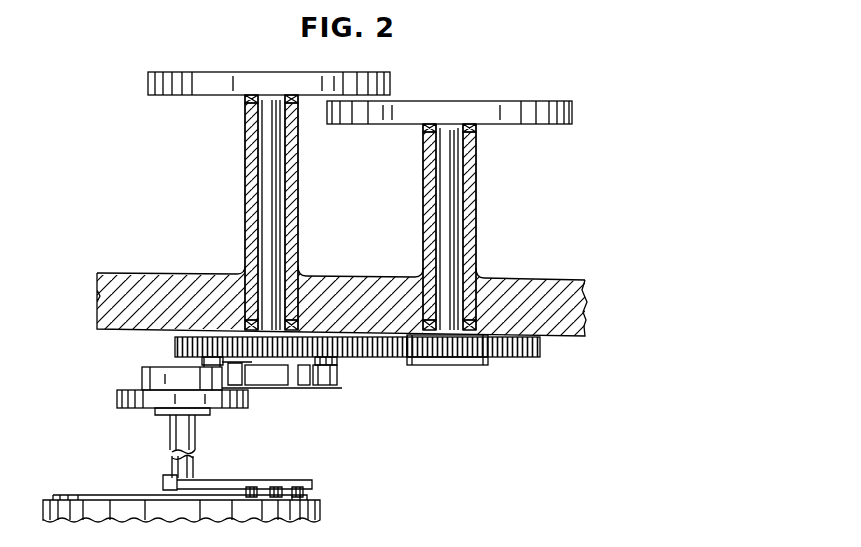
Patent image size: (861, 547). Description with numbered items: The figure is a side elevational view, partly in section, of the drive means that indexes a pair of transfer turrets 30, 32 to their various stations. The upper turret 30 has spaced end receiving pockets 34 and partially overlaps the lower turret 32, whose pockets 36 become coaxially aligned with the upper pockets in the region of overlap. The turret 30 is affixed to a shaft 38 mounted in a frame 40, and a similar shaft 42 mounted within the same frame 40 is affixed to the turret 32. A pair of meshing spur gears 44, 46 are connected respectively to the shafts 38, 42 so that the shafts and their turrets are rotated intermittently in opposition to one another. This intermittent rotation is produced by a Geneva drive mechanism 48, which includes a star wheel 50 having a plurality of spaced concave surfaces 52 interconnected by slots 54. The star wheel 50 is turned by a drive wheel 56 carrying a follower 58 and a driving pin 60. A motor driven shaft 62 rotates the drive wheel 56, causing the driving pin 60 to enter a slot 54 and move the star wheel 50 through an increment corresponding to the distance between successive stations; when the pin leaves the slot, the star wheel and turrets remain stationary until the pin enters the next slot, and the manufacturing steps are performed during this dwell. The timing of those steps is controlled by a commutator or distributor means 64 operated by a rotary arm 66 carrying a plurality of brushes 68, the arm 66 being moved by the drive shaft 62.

The transfer turret 30 is at (244, 72).
The transfer turret 32 is at (538, 102).
The end receiving pocket 34 is at (336, 86).
The end receiving pocket 36 is at (392, 114).
The shaft 38 is at (262, 176).
The frame 40 is at (137, 273).
The shaft 42 is at (455, 191).
The spur gear 44 is at (176, 347).
The spur gear 46 is at (540, 349).
The Geneva drive mechanism 48 is at (258, 410).
The star wheel 50 is at (336, 378).
The concave surface 52 is at (275, 384).
The slot 54 is at (302, 380).
The drive wheel 56 is at (118, 400).
The follower 58 is at (142, 378).
The driving pin 60 is at (198, 368).
The motor driven shaft 62 is at (172, 441).
The commutator or distributor means 64 is at (138, 490).
The rotary arm 66 is at (312, 484).
The brush 68 is at (276, 488).